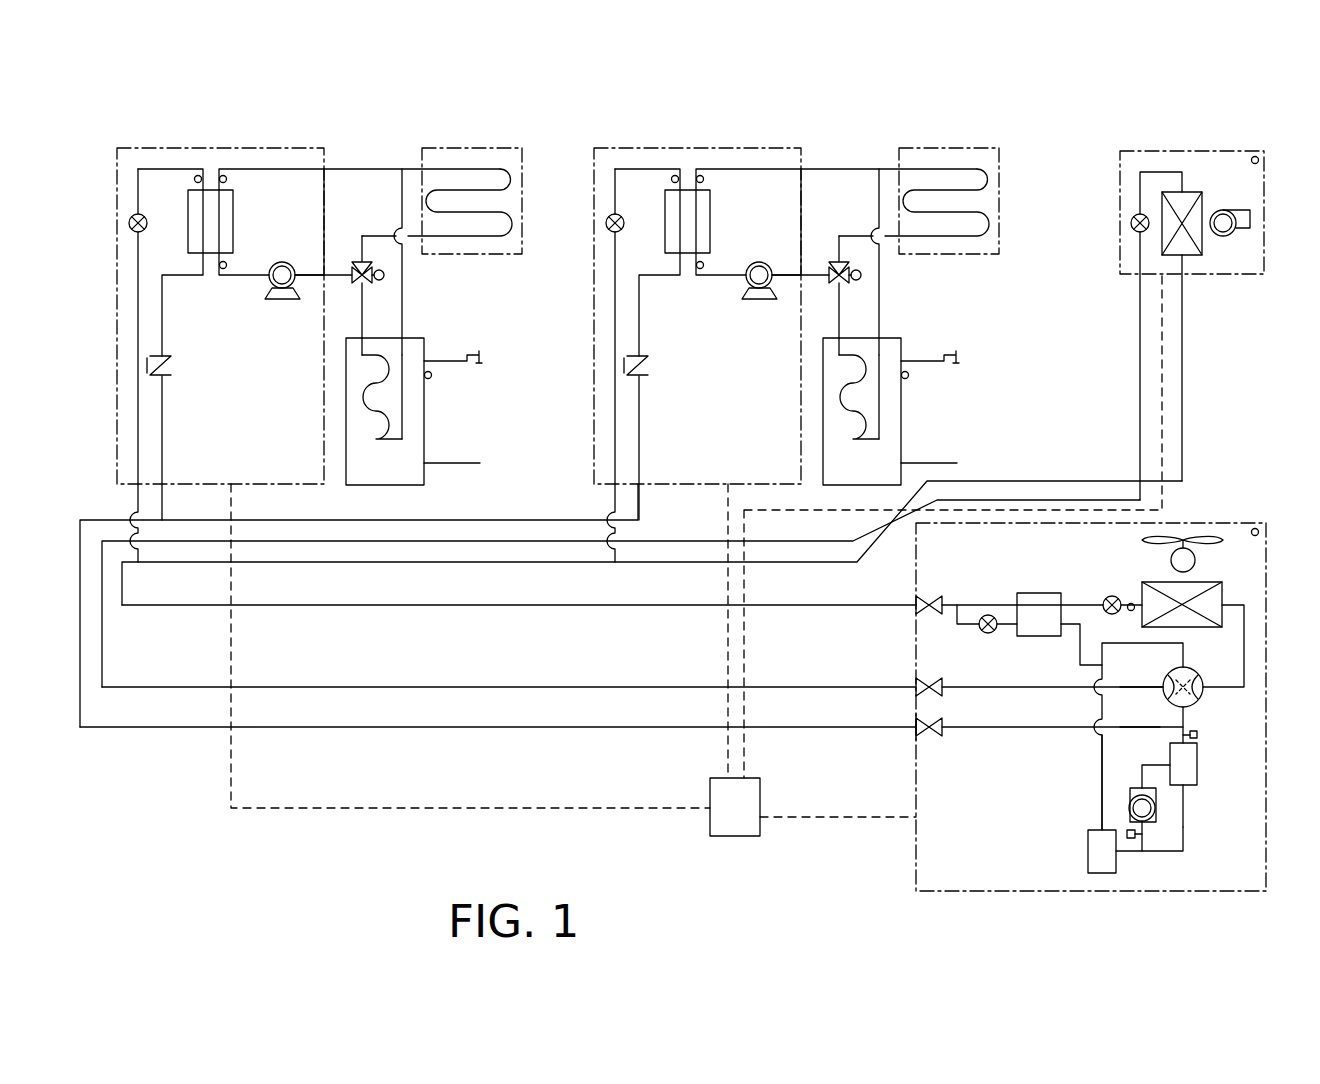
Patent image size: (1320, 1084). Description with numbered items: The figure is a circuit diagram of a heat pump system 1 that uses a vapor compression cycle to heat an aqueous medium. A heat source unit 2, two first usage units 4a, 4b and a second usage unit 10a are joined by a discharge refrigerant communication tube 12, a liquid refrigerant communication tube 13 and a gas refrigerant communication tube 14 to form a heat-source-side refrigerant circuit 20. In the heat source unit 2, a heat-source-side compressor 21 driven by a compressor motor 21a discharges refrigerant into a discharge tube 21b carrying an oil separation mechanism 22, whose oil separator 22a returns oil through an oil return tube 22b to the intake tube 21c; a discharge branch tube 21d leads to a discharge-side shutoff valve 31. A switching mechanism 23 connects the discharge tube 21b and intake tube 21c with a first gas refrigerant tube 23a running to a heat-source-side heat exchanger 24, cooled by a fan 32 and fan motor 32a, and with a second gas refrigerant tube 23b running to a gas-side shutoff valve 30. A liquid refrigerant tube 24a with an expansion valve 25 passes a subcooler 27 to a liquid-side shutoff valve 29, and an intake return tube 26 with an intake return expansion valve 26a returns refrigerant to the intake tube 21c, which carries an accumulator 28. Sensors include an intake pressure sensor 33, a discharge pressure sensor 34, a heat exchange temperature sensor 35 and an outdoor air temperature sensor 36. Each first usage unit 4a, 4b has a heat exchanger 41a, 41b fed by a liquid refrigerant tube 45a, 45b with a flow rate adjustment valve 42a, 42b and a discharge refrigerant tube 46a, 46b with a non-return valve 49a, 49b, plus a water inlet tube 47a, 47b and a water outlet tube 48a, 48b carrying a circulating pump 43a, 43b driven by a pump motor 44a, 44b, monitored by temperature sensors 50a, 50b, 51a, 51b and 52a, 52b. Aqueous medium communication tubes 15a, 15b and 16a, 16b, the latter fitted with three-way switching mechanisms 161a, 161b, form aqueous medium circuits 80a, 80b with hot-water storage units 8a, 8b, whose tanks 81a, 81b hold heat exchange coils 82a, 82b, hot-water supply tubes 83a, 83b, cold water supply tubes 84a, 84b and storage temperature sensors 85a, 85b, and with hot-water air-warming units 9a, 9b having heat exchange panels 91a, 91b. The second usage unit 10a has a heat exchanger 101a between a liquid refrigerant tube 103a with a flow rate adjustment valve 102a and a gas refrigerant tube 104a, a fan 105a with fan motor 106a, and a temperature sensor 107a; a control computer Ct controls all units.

The heat pump system 1 is at (1187, 289).
The heat source unit 2 is at (1207, 522).
The first usage unit 4a is at (288, 147).
The first usage unit 4b is at (697, 292).
The hot-water storage unit 8a is at (432, 341).
The hot-water storage unit 8b is at (895, 394).
The hot-water air-warming unit 9a is at (489, 147).
The hot-water air-warming unit 9b is at (949, 178).
The second usage unit 10a is at (1225, 148).
The discharge refrigerant communication tube 12 is at (421, 728).
The liquid refrigerant communication tube 13 is at (424, 606).
The gas refrigerant communication tube 14 is at (485, 686).
The aqueous medium communication tube 15a is at (345, 169).
The aqueous medium communication tube 15b is at (889, 145).
The aqueous medium communication tube 16a is at (352, 282).
The aqueous medium communication tube 16b is at (826, 287).
The heat-source-side refrigerant circuit 20 is at (907, 747).
The heat-source-side compressor 21 is at (1136, 788).
The heat-source-side compressor motor 21a is at (1155, 816).
The heat-source-side discharge tube 21b is at (1180, 718).
The heat-source-side intake tube 21c is at (1100, 783).
The heat-source-side discharge branch tube 21d is at (1008, 730).
The oil separation mechanism 22 is at (1203, 776).
The oil separator 22a is at (1193, 786).
The oil return tube 22b is at (1185, 822).
The heat-source-side switching mechanism 23 is at (1200, 701).
The first heat-source-side gas refrigerant tube 23a is at (1245, 651).
The second heat-source-side gas refrigerant tube 23b is at (1005, 690).
The heat-source-side heat exchanger 24 is at (1205, 628).
The heat-source-side liquid refrigerant tube 24a is at (1130, 603).
The heat-source-side expansion valve 25 is at (1105, 598).
The intake return tube 26 is at (1079, 646).
The intake return expansion valve 26a is at (988, 634).
The subcooler 27 is at (1035, 593).
The heat-source-side accumulator 28 is at (1088, 853).
The liquid-side shutoff valve 29 is at (932, 596).
The gas-side shutoff valve 30 is at (932, 678).
The discharge-side shutoff valve 31 is at (933, 737).
The heat-source-side fan 32 is at (1199, 541).
The heat-source-side fan motor 32a is at (1194, 565).
The heat-source-side intake pressure sensor 33 is at (1128, 830).
The heat-source-side discharge pressure sensor 34 is at (1198, 735).
The heat-source-side heat exchange temperature sensor 35 is at (1129, 611).
The outdoor air temperature sensor 36 is at (1259, 532).
The first usage-side heat exchanger 41a is at (234, 221).
The first usage-side heat exchanger 41b is at (717, 221).
The first usage-side flow rate adjustment valve 42a is at (147, 230).
The first usage-side flow rate adjustment valve 42b is at (636, 243).
The circulating pump 43a is at (281, 304).
The circulating pump 43b is at (759, 331).
The circulating pump motor 44a is at (290, 262).
The circulating pump motor 44b is at (774, 241).
The first usage-side liquid refrigerant tube 45a is at (136, 316).
The first usage-side liquid refrigerant tube 45b is at (576, 365).
The first usage-side discharge refrigerant tube 46a is at (165, 322).
The first usage-side discharge refrigerant tube 46b is at (657, 344).
The first usage-side water inlet tube 47a is at (236, 169).
The first usage-side water inlet tube 47b is at (748, 196).
The first usage-side water outlet tube 48a is at (338, 272).
The first usage-side water outlet tube 48b is at (809, 244).
The first usage-side discharge non-return valve 49a is at (171, 368).
The first usage-side discharge non-return valve 49b is at (661, 373).
The first usage-side heat exchange temperature sensor 50a is at (194, 180).
The first usage-side heat exchange temperature sensor 50b is at (648, 189).
The aqueous medium inlet temperature sensor 51a is at (227, 179).
The aqueous medium inlet temperature sensor 51b is at (731, 186).
The aqueous medium outlet temperature sensor 52a is at (227, 265).
The aqueous medium outlet temperature sensor 52b is at (729, 255).
The aqueous medium circuit 80a is at (417, 301).
The aqueous medium circuit 80b is at (907, 292).
The hot-water storage tank 81a is at (421, 335).
The hot-water storage tank 81b is at (885, 361).
The heat exchange coil 82a is at (366, 440).
The heat exchange coil 82b is at (854, 421).
The hot-water supply tube 83a is at (458, 366).
The hot-water supply tube 83b is at (931, 379).
The cold water supply tube 84a is at (456, 464).
The cold water supply tube 84b is at (946, 450).
The hot-water storage temperature sensor 85a is at (430, 379).
The hot-water storage temperature sensor 85b is at (925, 402).
The heat exchange panel 91a is at (488, 240).
The heat exchange panel 91b is at (916, 232).
The second usage-side heat exchanger 101a is at (1190, 192).
The second usage-side flow rate adjustment valve 102a is at (1130, 223).
The second usage-side liquid refrigerant tube 103a is at (1151, 172).
The second usage-side gas refrigerant tube 104a is at (1185, 266).
The usage-side fan 105a is at (1235, 237).
The usage-side fan motor 106a is at (1248, 218).
The outdoor temperature sensor 107a is at (1259, 160).
The aqueous-medium-side switching mechanism 161a is at (385, 273).
The aqueous-medium-side switching mechanism 161b is at (897, 271).
The control computer Ct is at (712, 836).